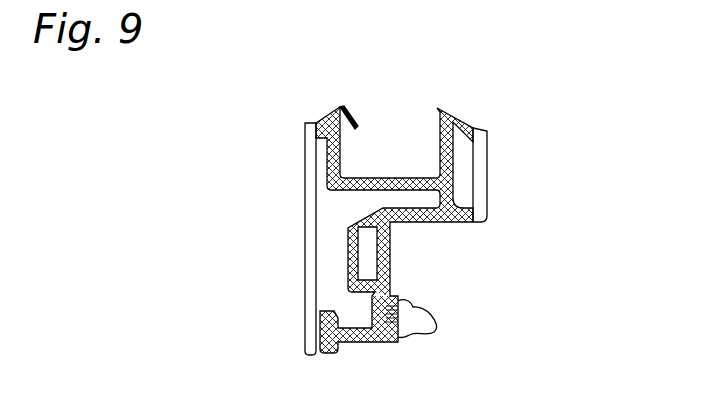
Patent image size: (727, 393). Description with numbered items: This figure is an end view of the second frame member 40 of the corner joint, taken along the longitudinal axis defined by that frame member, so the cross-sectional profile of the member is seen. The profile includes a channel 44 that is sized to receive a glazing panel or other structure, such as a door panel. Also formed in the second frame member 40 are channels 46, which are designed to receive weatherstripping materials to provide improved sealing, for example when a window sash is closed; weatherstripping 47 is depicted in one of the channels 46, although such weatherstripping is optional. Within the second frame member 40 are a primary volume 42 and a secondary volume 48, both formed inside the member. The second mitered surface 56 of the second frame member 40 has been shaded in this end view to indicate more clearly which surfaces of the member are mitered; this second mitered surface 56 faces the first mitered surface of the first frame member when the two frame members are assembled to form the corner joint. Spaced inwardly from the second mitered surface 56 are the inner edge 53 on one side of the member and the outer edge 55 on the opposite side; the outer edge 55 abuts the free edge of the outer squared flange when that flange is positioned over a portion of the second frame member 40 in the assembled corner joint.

The second frame member 40 is at (512, 95).
The primary volume 42 is at (328, 250).
The channel 44 is at (380, 138).
The channels 46 is at (323, 355).
The weatherstripping 47 is at (420, 312).
The secondary volume 48 is at (367, 243).
The inner edge 53 is at (486, 146).
The outer edge 55 is at (310, 180).
The second mitered surface 56 is at (453, 222).